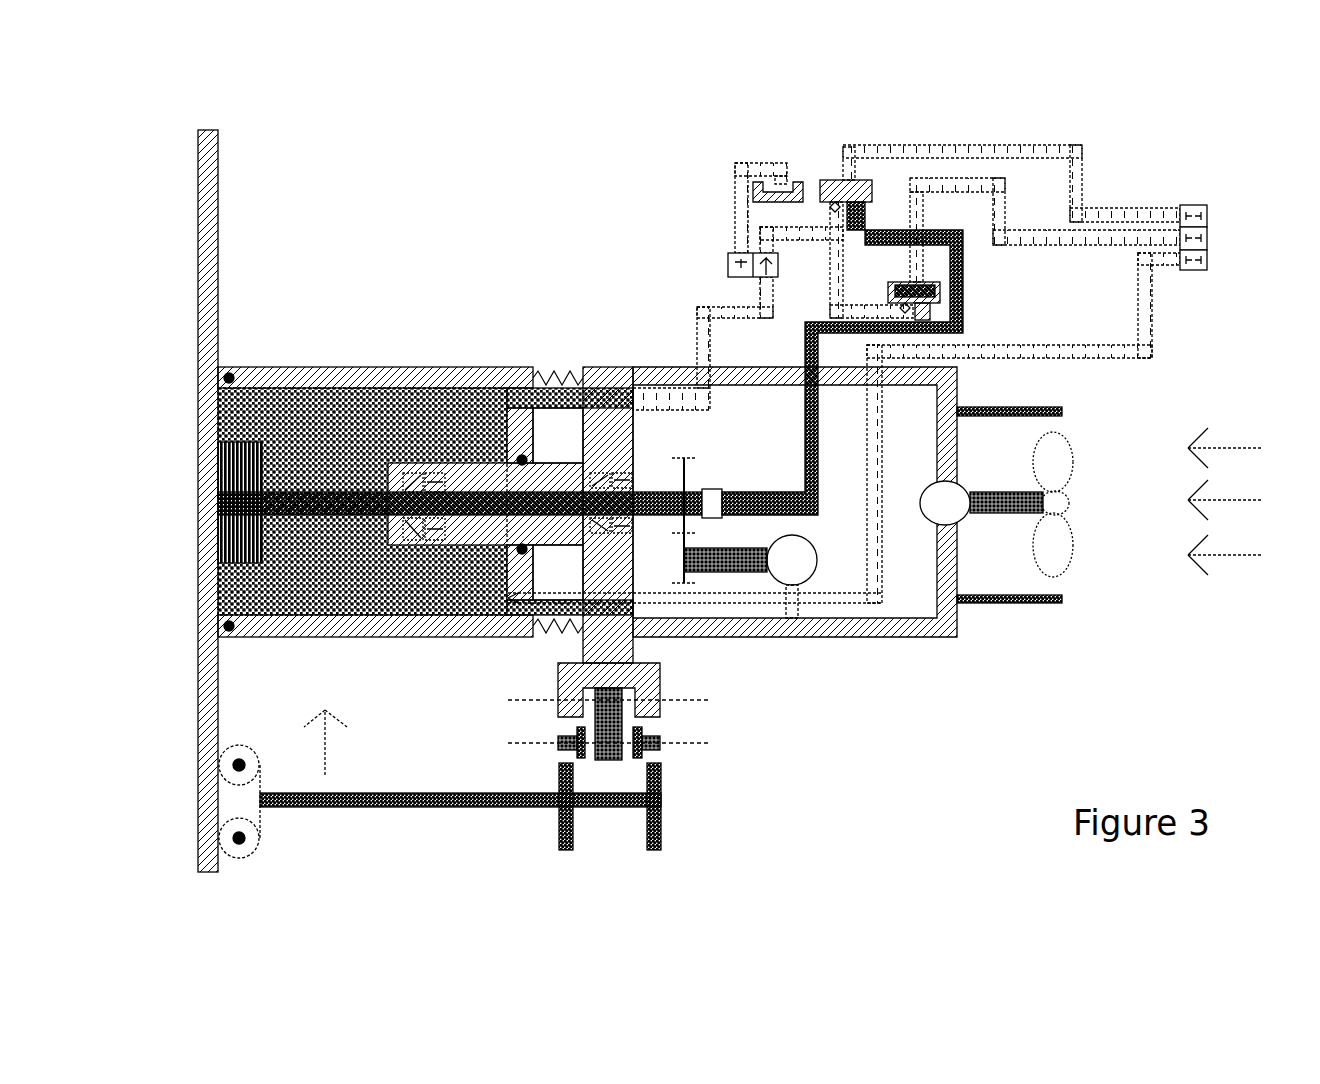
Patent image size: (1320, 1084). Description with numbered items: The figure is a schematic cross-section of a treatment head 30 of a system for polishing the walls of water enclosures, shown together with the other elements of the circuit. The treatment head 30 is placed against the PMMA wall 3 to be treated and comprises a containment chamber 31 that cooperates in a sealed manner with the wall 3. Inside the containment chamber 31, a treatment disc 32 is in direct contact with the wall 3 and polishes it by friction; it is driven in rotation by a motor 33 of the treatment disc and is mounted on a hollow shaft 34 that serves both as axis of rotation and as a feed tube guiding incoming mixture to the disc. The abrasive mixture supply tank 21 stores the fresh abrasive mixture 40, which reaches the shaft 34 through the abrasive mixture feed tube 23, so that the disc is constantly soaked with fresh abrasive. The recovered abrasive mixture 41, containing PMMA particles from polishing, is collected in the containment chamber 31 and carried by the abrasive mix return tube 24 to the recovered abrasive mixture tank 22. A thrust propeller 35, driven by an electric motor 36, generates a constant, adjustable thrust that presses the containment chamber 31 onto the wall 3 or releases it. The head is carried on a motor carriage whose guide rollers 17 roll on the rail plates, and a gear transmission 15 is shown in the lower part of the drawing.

The wall 3 is at (208, 232).
The gear transmission 15 is at (657, 800).
The guide rollers 17 is at (236, 766).
The abrasive mixture supply tank 21 is at (960, 287).
The recovered abrasive mixture tank 22 is at (840, 192).
The abrasive mixture feed tube 23 is at (818, 470).
The abrasive mix return tube 24 is at (700, 310).
The treatment head 30 is at (466, 347).
The containment chamber 31 is at (298, 412).
The treatment disc 32 is at (222, 500).
The motor of the treatment disc 33 is at (800, 563).
The hollow shaft 34 is at (652, 500).
The thrust propeller 35 is at (1060, 497).
The electric motor 36 is at (945, 502).
The fresh abrasive mixture 40 is at (811, 424).
The recovered abrasive mixture 41 is at (703, 347).